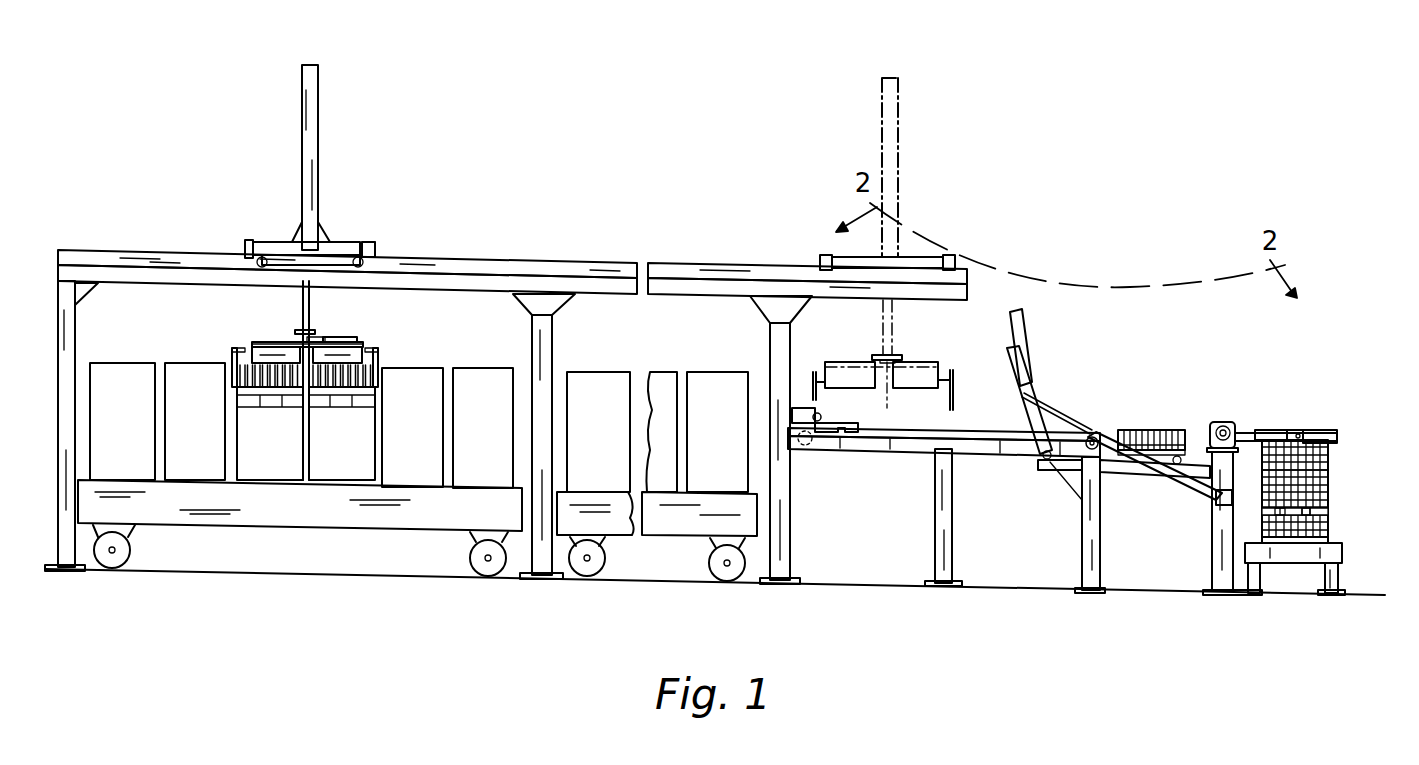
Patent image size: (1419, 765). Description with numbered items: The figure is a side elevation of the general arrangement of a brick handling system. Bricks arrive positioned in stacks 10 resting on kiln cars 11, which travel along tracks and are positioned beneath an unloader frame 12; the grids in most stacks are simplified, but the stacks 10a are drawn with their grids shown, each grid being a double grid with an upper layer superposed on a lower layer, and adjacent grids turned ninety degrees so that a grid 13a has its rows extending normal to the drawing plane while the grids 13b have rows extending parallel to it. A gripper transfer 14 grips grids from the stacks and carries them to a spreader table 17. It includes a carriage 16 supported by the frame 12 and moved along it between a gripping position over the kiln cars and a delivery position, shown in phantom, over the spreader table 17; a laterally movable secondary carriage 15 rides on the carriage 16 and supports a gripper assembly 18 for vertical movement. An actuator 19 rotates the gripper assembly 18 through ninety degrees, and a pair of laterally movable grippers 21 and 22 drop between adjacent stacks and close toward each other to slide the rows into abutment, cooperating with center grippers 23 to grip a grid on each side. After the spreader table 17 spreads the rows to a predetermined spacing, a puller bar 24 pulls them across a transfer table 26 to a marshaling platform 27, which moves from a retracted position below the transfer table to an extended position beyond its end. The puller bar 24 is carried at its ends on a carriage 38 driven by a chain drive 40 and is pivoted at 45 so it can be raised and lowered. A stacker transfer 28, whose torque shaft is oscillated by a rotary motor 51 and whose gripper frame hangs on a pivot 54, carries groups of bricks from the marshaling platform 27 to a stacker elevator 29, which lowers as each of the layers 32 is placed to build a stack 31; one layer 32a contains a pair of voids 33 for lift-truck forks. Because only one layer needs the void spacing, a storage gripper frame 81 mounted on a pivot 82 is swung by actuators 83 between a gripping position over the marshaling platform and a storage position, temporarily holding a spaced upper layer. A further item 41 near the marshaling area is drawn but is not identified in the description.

The stacks 10 is at (183, 370).
The stacks 10a is at (335, 481).
The kiln cars 11 is at (383, 524).
The unloader frame 12 is at (496, 264).
The grid 13a is at (245, 388).
The grids 13b is at (272, 405).
The gripper transfer 14 is at (333, 222).
The secondary carriage 15 is at (375, 246).
The carriage 16 is at (330, 268).
The spreader table 17 is at (910, 441).
The gripper assembly 18 is at (287, 333).
The actuator 19 is at (338, 338).
The laterally movable gripper 21 is at (382, 360).
The laterally movable gripper 22 is at (236, 360).
The center grippers 23 is at (295, 352).
The puller bar 24 is at (800, 408).
The transfer table 26 is at (1008, 458).
The marshaling platform 27 is at (1165, 468).
The stacker transfer 28 is at (1275, 427).
The stacker elevator 29 is at (1330, 543).
The stack 31 is at (1325, 467).
The layers 32 is at (1325, 495).
The layer 32a is at (1325, 513).
The voids 33 is at (1275, 513).
The carriage 38 is at (860, 429).
The chain drive 40 is at (848, 450).
The tray 41 is at (1188, 431).
The pivot 45 is at (822, 416).
The rotary motor 51 is at (1222, 422).
The pivot 54 is at (1300, 430).
The storage gripper frame 81 is at (1012, 378).
The pivot 82 is at (1048, 471).
The actuators 83 is at (1128, 466).